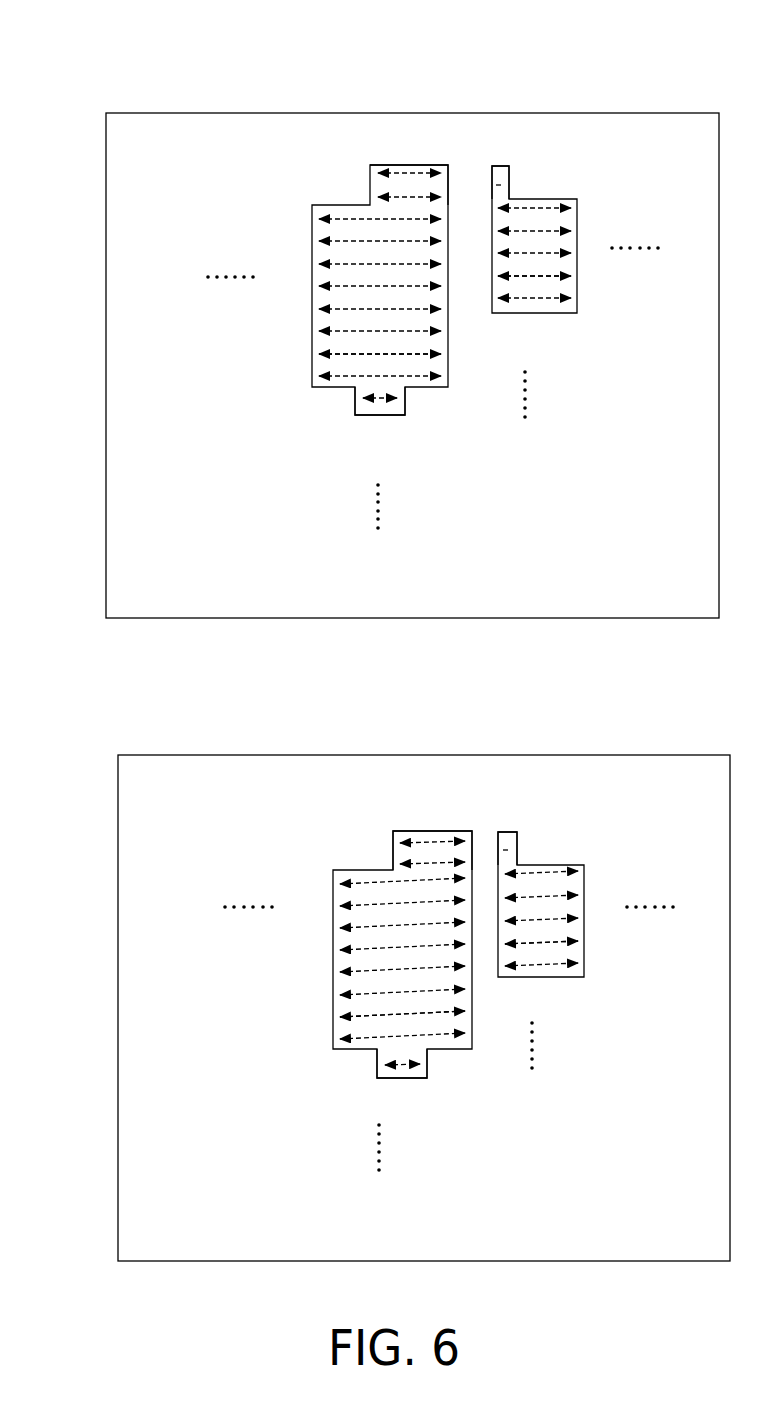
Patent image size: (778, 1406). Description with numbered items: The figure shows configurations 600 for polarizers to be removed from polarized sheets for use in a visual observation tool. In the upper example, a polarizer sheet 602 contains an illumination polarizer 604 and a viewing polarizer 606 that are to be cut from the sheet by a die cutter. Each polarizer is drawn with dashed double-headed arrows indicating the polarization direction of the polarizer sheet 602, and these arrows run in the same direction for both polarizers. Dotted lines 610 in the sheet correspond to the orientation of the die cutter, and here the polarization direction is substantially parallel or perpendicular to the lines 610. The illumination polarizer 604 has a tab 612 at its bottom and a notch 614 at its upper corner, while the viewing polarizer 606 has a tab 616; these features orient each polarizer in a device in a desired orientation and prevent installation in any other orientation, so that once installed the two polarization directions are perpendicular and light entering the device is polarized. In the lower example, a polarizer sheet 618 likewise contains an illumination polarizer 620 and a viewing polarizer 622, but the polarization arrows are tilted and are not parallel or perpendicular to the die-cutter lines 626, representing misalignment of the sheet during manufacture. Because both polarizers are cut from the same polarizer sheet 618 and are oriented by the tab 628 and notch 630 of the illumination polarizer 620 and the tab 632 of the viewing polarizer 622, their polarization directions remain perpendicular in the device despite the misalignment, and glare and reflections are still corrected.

The memory system layout 600 is at (138, 66).
The polarizer sheet 602 is at (655, 575).
The illumination polarizer 604 is at (312, 252).
The viewing polarizer 606 is at (577, 215).
The lines 610 is at (253, 283).
The tab 612 is at (390, 415).
The notch 614 is at (340, 180).
The tab 616 is at (500, 165).
The polarizer sheet 618 is at (665, 1235).
The illumination polarizer 620 is at (333, 985).
The viewing polarizer 622 is at (584, 880).
The lines 626 is at (253, 905).
The tab 628 is at (407, 1078).
The notch 630 is at (358, 847).
The tab 632 is at (517, 832).